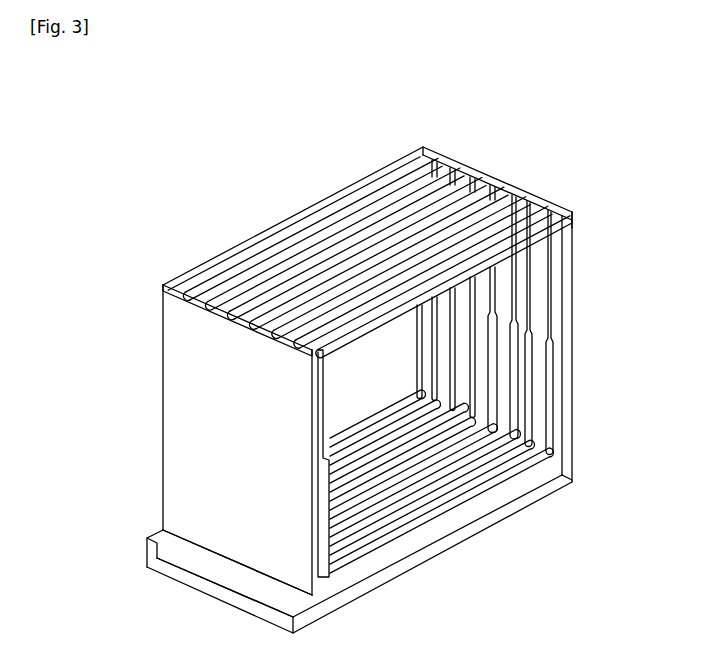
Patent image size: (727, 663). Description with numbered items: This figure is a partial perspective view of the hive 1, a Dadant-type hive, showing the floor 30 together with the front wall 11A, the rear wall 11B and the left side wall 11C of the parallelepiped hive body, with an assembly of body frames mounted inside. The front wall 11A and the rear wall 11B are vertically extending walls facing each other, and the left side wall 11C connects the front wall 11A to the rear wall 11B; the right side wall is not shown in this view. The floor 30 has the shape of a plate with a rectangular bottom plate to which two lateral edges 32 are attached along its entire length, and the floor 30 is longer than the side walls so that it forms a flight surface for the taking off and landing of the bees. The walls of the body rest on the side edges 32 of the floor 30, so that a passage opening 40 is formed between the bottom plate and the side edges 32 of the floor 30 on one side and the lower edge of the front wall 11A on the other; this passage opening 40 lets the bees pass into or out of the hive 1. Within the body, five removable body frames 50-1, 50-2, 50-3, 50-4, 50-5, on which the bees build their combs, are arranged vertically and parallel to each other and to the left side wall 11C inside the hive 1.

The hive 1 is at (125, 200).
The front wall 11A is at (190, 367).
The rear wall 11B is at (565, 404).
The left side wall 11C is at (281, 222).
The floor 30 is at (507, 530).
The lateral edges 32 is at (150, 537).
The passage opening 40 is at (201, 557).
The body frame 50-1 is at (402, 183).
The body frame 50-2 is at (450, 200).
The body frame 50-3 is at (490, 198).
The body frame 50-4 is at (517, 207).
The body frame 50-5 is at (543, 213).